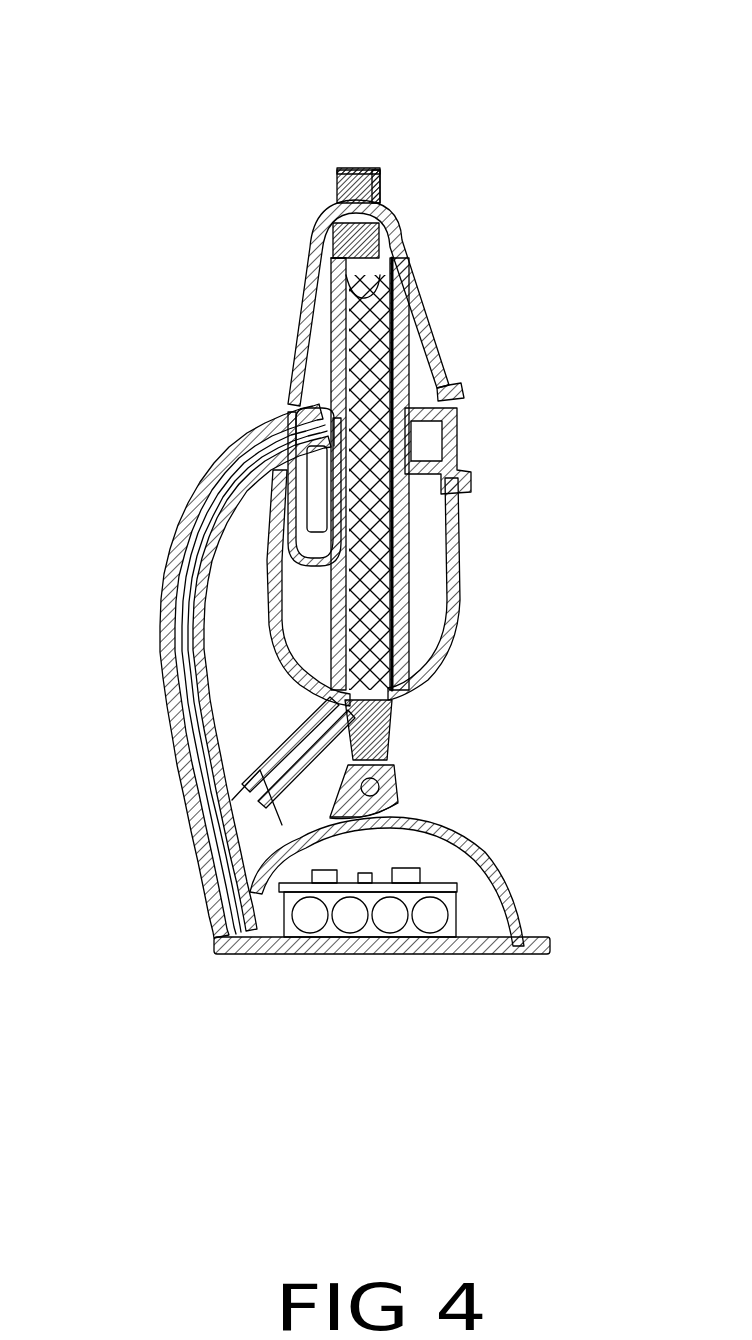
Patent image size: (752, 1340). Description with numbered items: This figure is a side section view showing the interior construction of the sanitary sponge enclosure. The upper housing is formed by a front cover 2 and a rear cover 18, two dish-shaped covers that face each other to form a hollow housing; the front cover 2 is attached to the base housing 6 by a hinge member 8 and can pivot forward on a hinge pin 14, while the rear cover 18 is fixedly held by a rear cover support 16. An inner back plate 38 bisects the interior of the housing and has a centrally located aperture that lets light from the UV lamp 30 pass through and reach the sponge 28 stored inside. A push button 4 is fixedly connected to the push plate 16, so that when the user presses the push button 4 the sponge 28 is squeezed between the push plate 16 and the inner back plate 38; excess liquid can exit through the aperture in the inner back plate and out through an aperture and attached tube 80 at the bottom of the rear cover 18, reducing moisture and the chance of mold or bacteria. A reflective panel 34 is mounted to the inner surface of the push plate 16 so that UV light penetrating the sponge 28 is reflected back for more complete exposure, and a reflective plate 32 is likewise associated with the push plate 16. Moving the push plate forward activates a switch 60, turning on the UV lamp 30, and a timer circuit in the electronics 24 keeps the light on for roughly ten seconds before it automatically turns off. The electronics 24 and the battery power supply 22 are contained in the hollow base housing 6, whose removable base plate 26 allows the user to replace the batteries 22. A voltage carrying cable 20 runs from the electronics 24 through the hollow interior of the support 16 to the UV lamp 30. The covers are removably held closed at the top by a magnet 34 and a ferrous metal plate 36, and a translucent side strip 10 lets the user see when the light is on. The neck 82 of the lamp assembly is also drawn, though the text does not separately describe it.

The housing 2 is at (432, 303).
The switch block 4 is at (492, 428).
The base 6 is at (416, 875).
The lamp assembly 8 is at (492, 776).
The cap 10 is at (407, 126).
The connector 14 is at (420, 779).
The outer sheath 16 is at (328, 671).
The housing wall 18 is at (238, 446).
The handle 20 is at (229, 644).
The batteries 22 is at (319, 990).
The circuit board 24 is at (368, 980).
The base plate 26 is at (382, 1031).
The inner tube 28 is at (445, 419).
The clip 30 is at (234, 418).
The bulb wall 32 is at (504, 603).
The cap top 34 is at (328, 87).
The cap side 36 is at (429, 148).
The tube top 38 is at (261, 186).
The tube head 60 is at (308, 152).
The struts 80 is at (287, 744).
The neck 82 is at (403, 716).